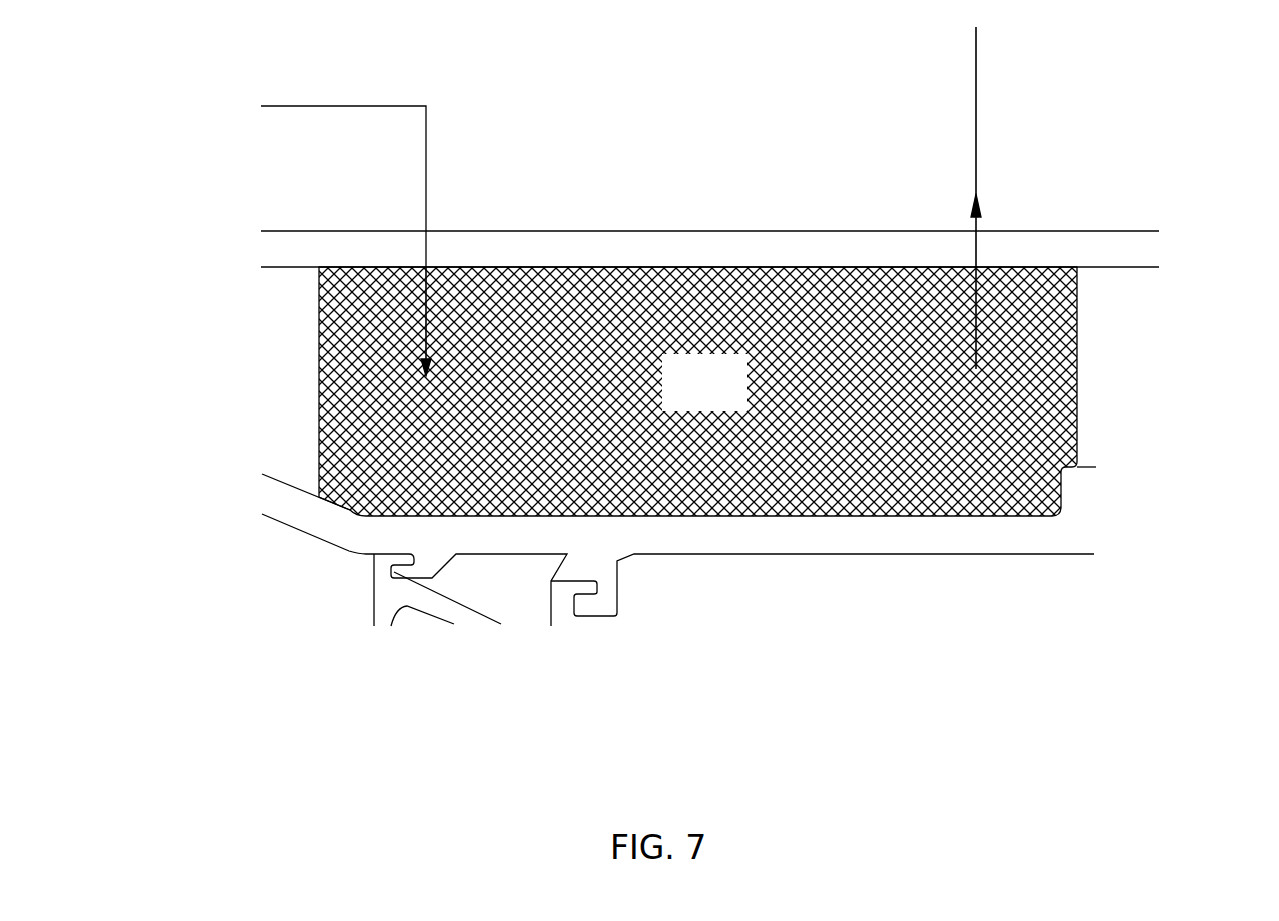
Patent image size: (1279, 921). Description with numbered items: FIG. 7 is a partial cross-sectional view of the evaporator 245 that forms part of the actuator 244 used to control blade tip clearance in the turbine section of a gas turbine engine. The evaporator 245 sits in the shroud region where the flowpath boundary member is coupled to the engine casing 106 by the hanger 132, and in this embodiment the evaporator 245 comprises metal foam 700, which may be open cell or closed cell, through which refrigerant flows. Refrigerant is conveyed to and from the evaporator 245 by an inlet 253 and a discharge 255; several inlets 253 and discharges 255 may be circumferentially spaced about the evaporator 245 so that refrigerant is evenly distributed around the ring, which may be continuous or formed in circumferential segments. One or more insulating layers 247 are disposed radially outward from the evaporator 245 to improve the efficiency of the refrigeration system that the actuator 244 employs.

The engine casing 106 is at (945, 537).
The hanger 132 is at (375, 590).
The actuator 244 is at (1110, 142).
The evaporator 245 is at (722, 388).
The insulating layers 247 is at (1118, 258).
The inlet 253 is at (422, 152).
The discharge 255 is at (972, 55).
The metal foam 700 is at (370, 396).